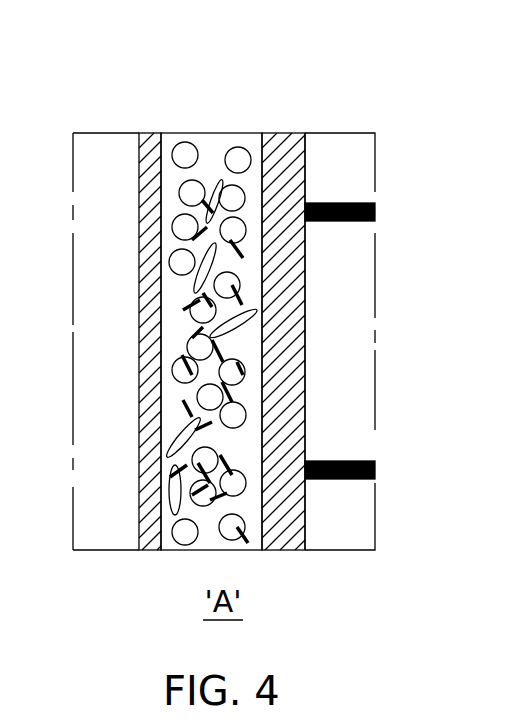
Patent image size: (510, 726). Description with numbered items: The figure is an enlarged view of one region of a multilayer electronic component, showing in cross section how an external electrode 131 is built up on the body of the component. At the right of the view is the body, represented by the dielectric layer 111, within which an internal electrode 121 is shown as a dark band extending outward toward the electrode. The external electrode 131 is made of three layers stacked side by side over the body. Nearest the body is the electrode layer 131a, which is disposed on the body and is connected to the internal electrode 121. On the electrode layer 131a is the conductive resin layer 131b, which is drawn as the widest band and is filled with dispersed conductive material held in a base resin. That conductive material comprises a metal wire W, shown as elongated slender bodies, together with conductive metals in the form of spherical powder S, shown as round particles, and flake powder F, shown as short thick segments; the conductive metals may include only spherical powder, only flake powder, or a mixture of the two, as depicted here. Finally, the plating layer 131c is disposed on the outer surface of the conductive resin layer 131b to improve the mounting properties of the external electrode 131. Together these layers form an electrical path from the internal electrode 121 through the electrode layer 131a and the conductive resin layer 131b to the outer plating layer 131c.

The dielectric layer 111 is at (358, 160).
The internal electrode 121 is at (377, 213).
The external electrode 131 is at (302, 59).
The electrode layer 131a is at (280, 146).
The conductive resin layer 131b is at (216, 148).
The plating layer 131c is at (151, 147).
The spherical powder S is at (168, 252).
The flake powder F is at (190, 286).
The metal wire W is at (192, 327).